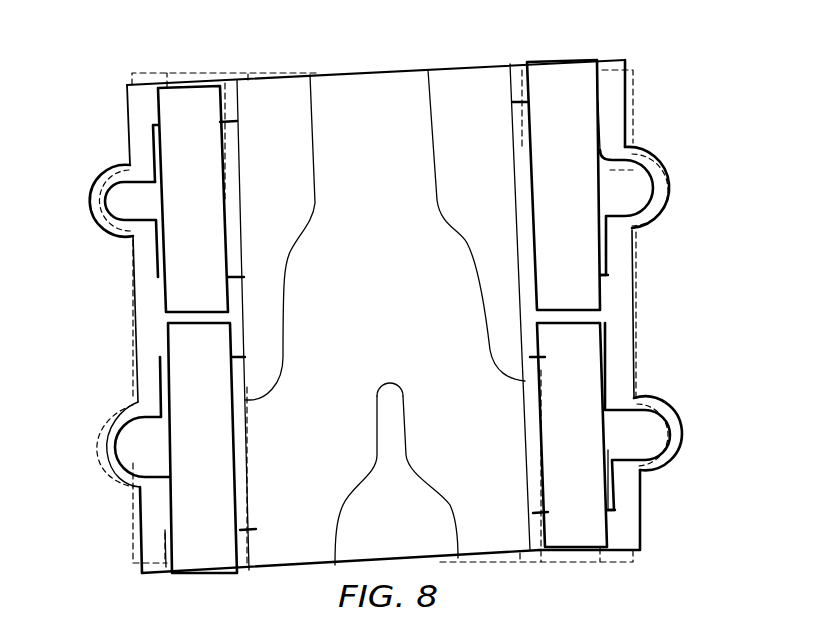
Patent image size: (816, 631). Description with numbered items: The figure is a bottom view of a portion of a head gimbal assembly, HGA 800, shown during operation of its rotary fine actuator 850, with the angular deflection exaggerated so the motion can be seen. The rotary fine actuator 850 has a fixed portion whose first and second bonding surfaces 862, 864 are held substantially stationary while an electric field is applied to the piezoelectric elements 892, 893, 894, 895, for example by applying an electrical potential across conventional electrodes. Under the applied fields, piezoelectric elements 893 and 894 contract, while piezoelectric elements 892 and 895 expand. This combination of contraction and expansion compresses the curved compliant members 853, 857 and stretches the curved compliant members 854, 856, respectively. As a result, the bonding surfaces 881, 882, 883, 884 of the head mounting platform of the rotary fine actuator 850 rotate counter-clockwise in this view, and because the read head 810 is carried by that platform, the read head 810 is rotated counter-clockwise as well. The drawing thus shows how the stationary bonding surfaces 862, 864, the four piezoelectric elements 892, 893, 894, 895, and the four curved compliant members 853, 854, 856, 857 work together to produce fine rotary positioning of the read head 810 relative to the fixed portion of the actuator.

The HGA 800 is at (738, 111).
The read head 810 is at (353, 90).
The rotary fine actuator 850 is at (654, 299).
The curved compliant member 853 is at (100, 195).
The curved compliant member 854 is at (117, 465).
The curved compliant member 856 is at (655, 190).
The curved compliant member 857 is at (672, 443).
The first bonding surface 862 is at (165, 317).
The second bonding surface 864 is at (615, 312).
The bonding surface 881 is at (612, 96).
The bonding surface 882 is at (138, 112).
The bonding surface 883 is at (150, 552).
The bonding surface 884 is at (628, 528).
The piezoelectric element 892 is at (182, 379).
The piezoelectric element 893 is at (182, 250).
The piezoelectric element 894 is at (587, 380).
The piezoelectric element 895 is at (580, 247).